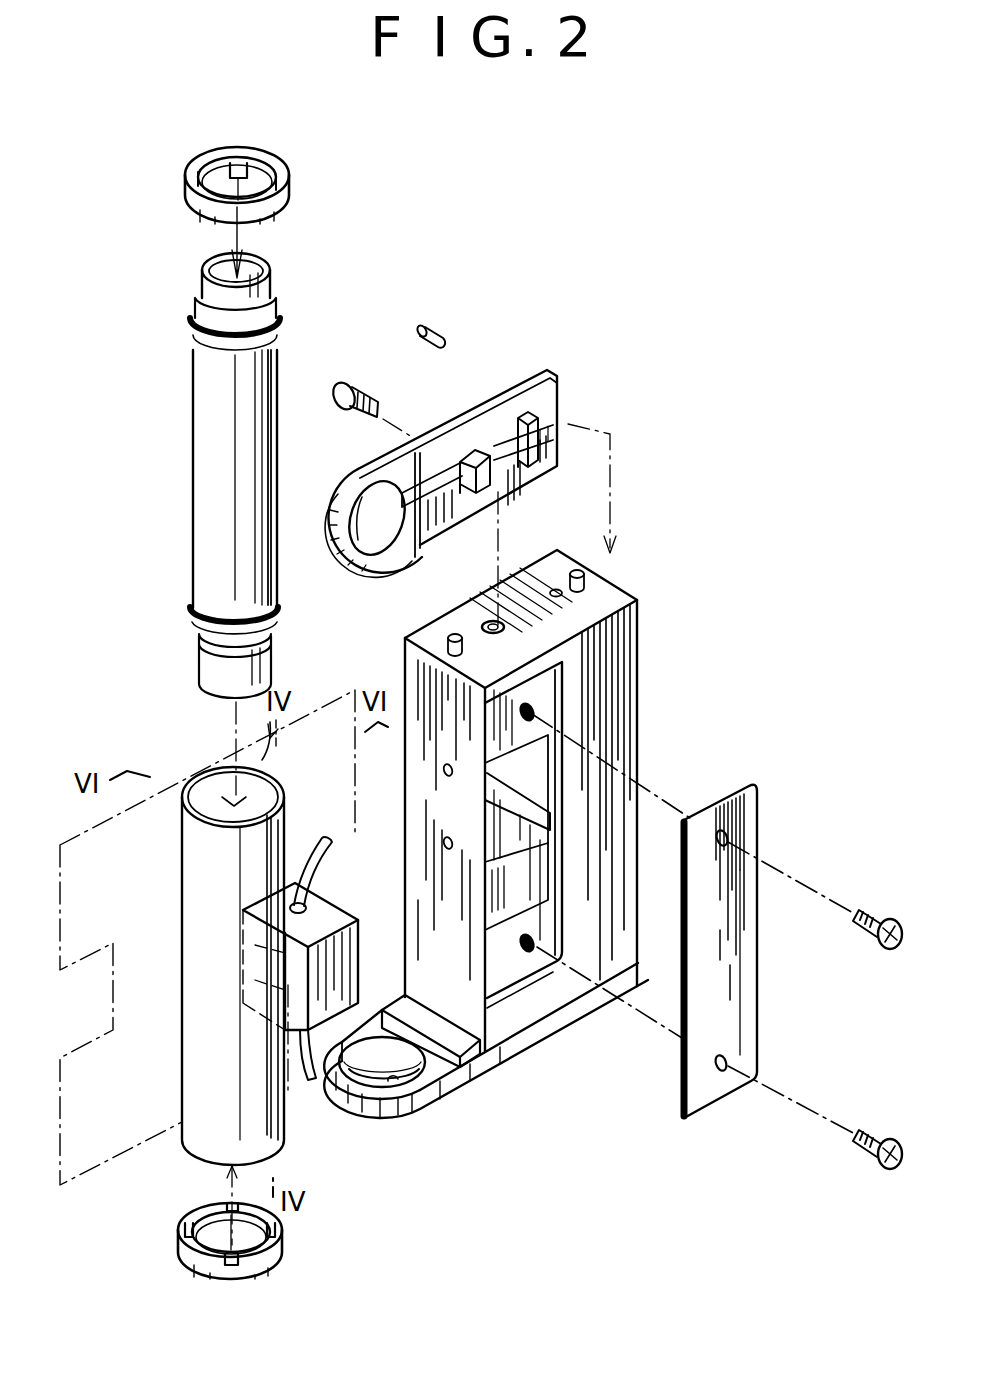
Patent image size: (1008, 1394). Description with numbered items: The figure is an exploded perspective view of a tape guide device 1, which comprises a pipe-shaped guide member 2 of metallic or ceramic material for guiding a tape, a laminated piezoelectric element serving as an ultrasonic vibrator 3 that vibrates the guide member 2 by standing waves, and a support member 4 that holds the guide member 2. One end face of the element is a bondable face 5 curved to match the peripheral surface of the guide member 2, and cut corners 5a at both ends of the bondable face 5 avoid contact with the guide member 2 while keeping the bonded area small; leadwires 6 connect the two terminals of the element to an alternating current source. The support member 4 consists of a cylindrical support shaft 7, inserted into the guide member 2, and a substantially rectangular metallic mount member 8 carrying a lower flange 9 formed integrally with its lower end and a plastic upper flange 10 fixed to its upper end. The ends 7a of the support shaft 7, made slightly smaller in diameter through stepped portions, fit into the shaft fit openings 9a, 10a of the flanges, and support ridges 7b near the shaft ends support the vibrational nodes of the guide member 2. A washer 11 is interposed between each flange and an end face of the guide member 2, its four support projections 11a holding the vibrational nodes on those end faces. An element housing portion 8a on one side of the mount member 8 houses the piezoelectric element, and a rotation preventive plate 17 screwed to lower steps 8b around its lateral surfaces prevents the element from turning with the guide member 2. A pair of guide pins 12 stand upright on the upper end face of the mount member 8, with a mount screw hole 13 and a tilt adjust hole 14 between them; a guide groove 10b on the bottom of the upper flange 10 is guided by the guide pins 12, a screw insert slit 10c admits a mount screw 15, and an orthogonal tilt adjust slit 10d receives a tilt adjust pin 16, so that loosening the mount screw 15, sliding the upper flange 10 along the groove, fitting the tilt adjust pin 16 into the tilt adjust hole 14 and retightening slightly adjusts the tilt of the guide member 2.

The tape guide device 1 is at (662, 436).
The guide member 2 is at (200, 862).
The ultrasonic vibrator (laminated piezoelectric element) 3 is at (335, 892).
The support member 4 is at (340, 324).
The bondable face 5 is at (282, 1093).
The cut corners 5a is at (295, 968).
The leadwires 6 is at (311, 978).
The support shaft 7 is at (193, 507).
The pin end portion 7a is at (202, 292).
The support ridges 7b is at (197, 352).
The mount member 8 is at (622, 683).
The element housing portion 8a is at (505, 855).
The lower steps 8b is at (528, 955).
The lower flange 9 is at (447, 1102).
The shaft fit opening 9a is at (393, 1081).
The upper flange 10 is at (478, 392).
The shaft fit opening 10a is at (364, 500).
The guide groove 10b is at (565, 422).
The screw insert slit 10c is at (470, 450).
The tilt adjust slit 10d is at (530, 395).
The washer 11 is at (190, 178).
The support projections 11a is at (228, 182).
The guide pins 12 is at (450, 645).
The mount screw hole 13 is at (490, 622).
The tilt adjust hole 14 is at (554, 590).
The mount screw 15 is at (340, 390).
The tilt adjust pin 16 is at (437, 340).
The rotation preventive plate 17 is at (722, 948).